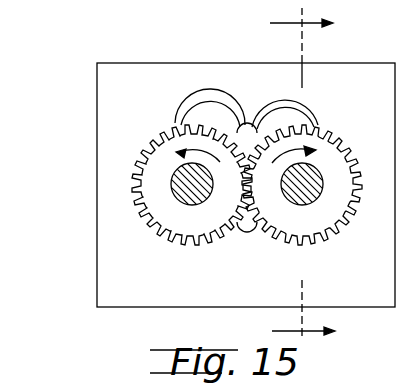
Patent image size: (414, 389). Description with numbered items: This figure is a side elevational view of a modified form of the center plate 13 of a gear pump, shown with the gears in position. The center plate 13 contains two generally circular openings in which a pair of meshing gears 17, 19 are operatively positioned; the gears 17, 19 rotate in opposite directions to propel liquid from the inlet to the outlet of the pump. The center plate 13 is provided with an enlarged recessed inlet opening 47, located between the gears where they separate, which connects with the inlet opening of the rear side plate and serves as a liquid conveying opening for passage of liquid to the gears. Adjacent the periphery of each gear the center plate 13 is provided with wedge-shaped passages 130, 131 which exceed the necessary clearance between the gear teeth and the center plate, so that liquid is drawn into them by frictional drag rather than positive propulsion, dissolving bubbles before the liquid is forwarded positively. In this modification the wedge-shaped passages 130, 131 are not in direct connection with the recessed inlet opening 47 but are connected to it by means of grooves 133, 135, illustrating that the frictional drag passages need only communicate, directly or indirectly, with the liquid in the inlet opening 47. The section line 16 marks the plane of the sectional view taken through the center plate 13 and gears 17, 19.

The center plate 13 is at (100, 112).
The section line 16- 16 is at (288, 175).
The meshing gear 17 is at (165, 233).
The meshing gear 19 is at (322, 230).
The recessed inlet opening 47 is at (248, 126).
The wedge-shaped passage 130 is at (313, 124).
The wedge-shaped passage 131 is at (175, 128).
The groove 133 is at (303, 112).
The groove 135 is at (233, 82).